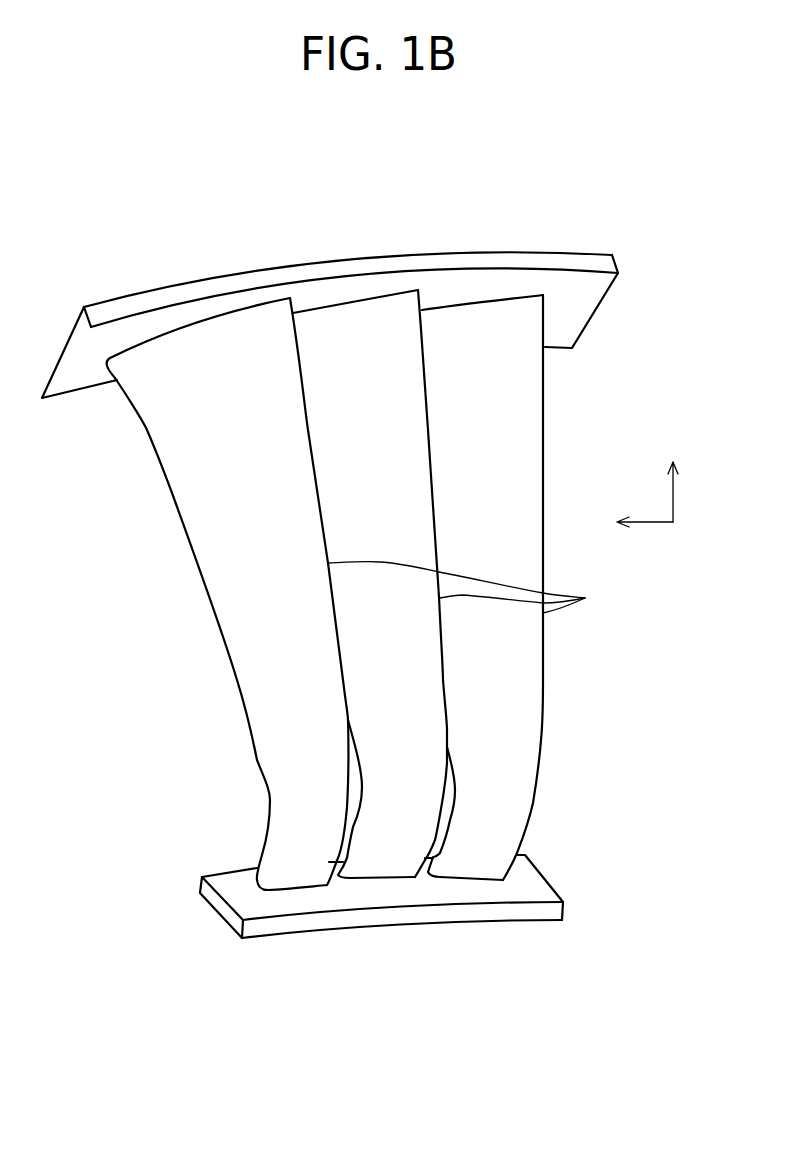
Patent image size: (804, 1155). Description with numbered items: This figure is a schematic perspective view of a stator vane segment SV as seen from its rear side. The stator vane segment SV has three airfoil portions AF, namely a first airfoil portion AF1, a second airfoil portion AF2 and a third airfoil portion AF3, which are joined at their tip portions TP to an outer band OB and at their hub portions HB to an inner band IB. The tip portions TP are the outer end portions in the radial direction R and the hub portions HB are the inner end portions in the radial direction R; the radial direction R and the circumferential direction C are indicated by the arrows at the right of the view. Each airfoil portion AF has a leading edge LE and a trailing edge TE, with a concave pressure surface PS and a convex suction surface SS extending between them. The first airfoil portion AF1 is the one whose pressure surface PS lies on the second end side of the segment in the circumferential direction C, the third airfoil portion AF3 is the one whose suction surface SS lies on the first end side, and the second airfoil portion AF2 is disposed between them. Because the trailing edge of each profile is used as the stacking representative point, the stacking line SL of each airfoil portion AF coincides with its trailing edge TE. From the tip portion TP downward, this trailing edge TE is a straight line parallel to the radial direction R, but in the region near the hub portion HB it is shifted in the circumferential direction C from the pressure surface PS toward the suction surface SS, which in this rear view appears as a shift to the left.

The stator vane segment SV is at (526, 221).
The outer band OB is at (573, 308).
The tip portion TP is at (104, 396).
The leading edge LE is at (172, 493).
The airfoil portion AF is at (343, 590).
The first airfoil portion AF1 is at (519, 587).
The second airfoil portion AF2 is at (370, 584).
The third airfoil portion AF3 is at (194, 594).
The trailing edge TE is at (585, 598).
The stacking line SL is at (542, 622).
The suction surface SS is at (267, 682).
The pressure surface PS is at (507, 710).
The hub portion HB is at (217, 850).
The inner band IB is at (538, 883).
The radial direction R is at (672, 477).
The circumferential direction C is at (630, 525).